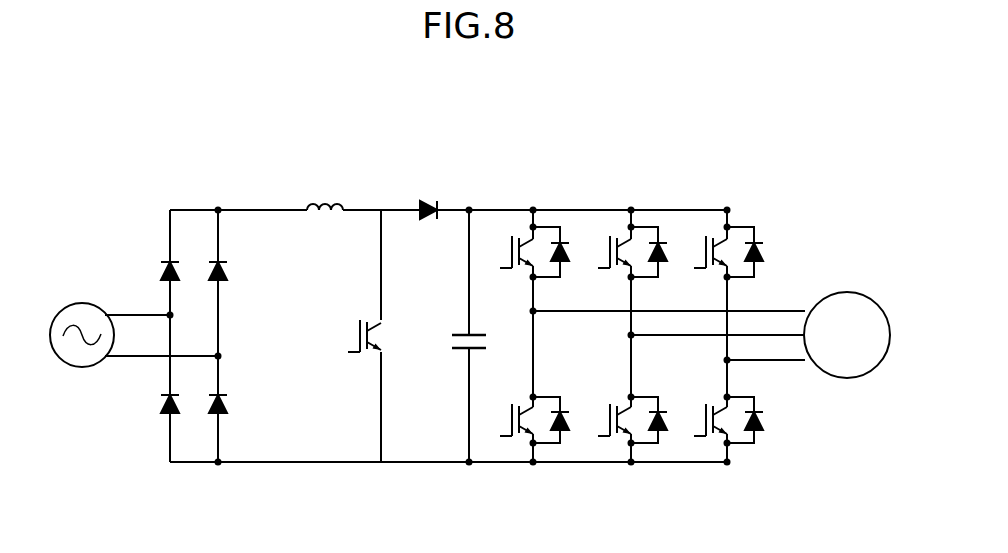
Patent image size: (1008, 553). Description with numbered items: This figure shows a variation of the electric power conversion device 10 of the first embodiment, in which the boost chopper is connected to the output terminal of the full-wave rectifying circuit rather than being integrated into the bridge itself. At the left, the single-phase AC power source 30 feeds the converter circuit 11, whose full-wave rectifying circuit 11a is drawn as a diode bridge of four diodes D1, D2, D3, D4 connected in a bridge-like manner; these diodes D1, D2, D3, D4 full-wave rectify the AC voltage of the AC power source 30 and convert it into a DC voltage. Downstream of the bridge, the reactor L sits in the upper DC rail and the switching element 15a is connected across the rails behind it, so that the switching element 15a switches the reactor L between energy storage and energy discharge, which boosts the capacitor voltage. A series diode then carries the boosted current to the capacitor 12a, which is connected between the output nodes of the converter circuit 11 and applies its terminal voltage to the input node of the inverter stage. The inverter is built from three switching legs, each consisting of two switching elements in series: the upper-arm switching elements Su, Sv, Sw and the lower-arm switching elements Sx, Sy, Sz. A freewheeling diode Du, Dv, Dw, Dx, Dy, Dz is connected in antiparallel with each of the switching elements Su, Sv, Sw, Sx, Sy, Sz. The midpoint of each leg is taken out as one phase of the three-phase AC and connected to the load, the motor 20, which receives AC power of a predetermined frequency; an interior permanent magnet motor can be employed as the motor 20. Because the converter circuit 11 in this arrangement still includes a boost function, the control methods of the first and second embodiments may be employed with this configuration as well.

The electric power conversion device 10 is at (453, 133).
The converter circuit 11 is at (321, 480).
The full-wave rectifying circuit 11a is at (227, 423).
The capacitor 12a is at (482, 350).
The switching element 15a is at (370, 360).
The motor 20 is at (846, 292).
The single-phase AC power source 30 is at (82, 368).
The reactor L is at (317, 198).
The diode D1 is at (165, 260).
The diode D2 is at (165, 393).
The diode D3 is at (223, 260).
The diode D4 is at (223, 393).
The upper-arm switching element Su is at (508, 268).
The upper-arm switching element Sv is at (606, 268).
The upper-arm switching element Sw is at (702, 268).
The lower-arm switching element Sx is at (510, 438).
The lower-arm switching element Sy is at (608, 438).
The lower-arm switching element Sz is at (704, 438).
The freewheeling diode Du is at (563, 242).
The freewheeling diode Dv is at (661, 242).
The freewheeling diode Dw is at (757, 242).
The freewheeling diode Dx is at (563, 411).
The freewheeling diode Dy is at (661, 411).
The freewheeling diode Dz is at (757, 411).